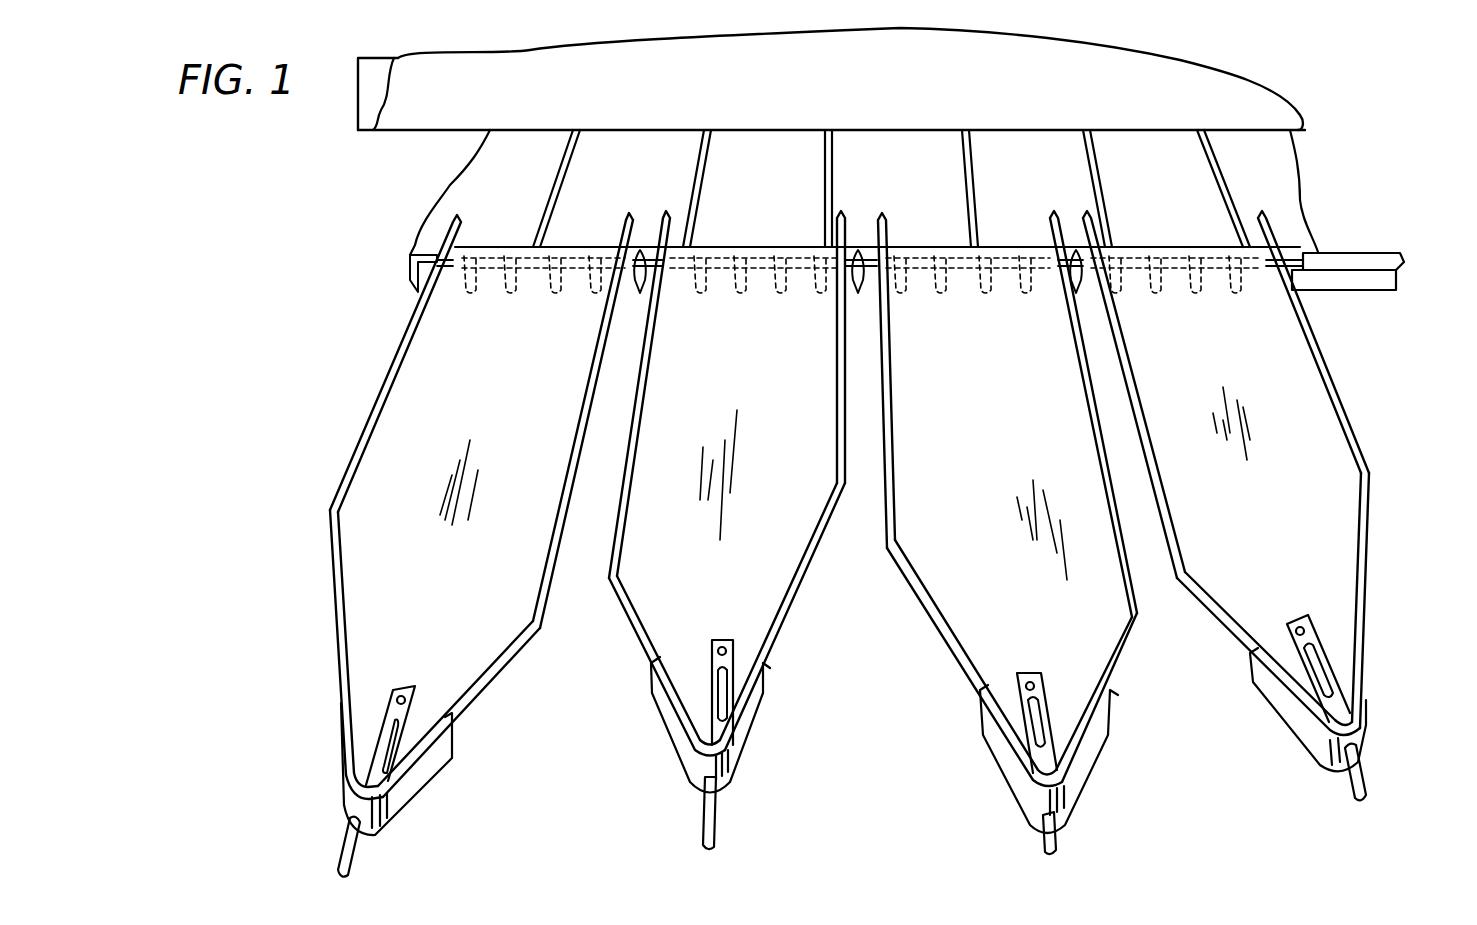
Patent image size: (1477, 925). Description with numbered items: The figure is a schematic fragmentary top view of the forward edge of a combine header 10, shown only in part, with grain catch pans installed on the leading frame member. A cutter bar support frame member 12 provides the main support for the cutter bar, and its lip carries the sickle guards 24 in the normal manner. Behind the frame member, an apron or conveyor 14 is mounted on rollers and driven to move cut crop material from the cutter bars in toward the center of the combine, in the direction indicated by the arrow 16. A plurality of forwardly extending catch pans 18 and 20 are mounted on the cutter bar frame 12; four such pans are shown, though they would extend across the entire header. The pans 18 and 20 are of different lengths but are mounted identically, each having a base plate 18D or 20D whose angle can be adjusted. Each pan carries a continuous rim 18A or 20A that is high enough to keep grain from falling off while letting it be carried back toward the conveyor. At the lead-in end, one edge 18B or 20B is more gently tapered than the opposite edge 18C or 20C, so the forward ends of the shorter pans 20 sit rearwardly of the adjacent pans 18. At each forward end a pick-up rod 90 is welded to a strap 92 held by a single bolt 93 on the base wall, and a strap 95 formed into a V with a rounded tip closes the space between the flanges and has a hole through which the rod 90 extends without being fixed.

The combine header 10 is at (375, 237).
The cutter bar support frame member 12 is at (1354, 283).
The apron or conveyor 14 is at (478, 190).
The arrow 16 is at (654, 112).
The catch pan 18 is at (727, 505).
The rim 18A is at (590, 360).
The lead-in edge 18B is at (347, 597).
The lead-in edge 18C is at (462, 712).
The base plate 18D is at (423, 452).
The catch pan 20 is at (1023, 483).
The rim 20A is at (838, 356).
The lead-in edge 20B is at (1370, 563).
The lead-in edge 20C is at (637, 617).
The base plate 20D is at (1272, 397).
The sickle guards 24 is at (860, 287).
The pick-up rod 90 is at (1350, 783).
The strap 92 is at (1292, 648).
The bolt 93 is at (858, 661).
The strap 95 is at (1300, 717).